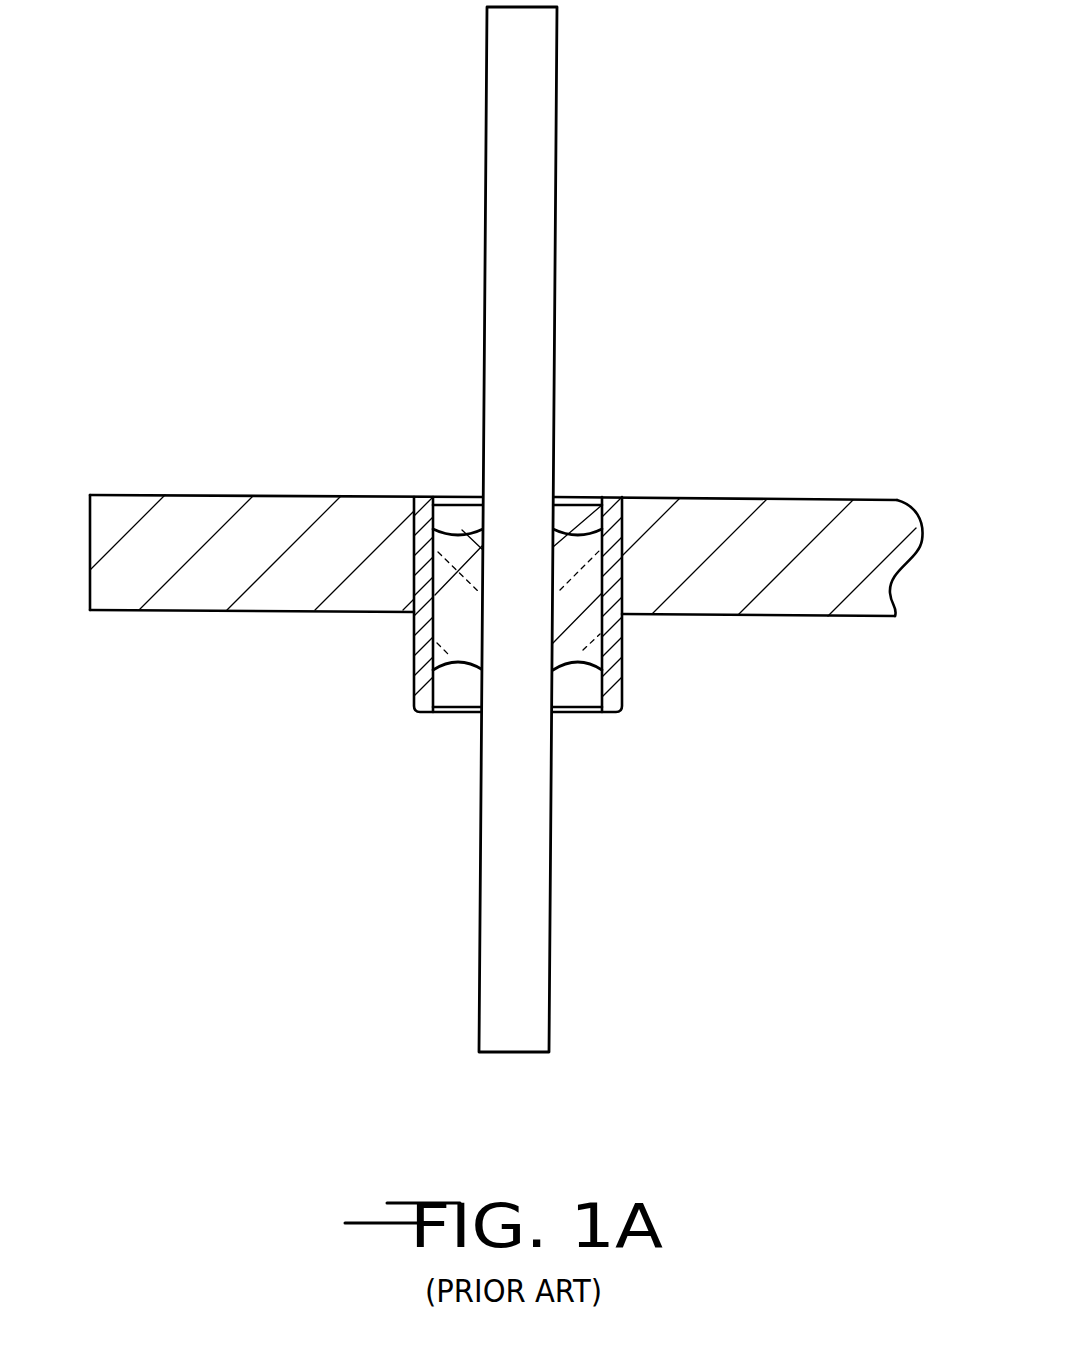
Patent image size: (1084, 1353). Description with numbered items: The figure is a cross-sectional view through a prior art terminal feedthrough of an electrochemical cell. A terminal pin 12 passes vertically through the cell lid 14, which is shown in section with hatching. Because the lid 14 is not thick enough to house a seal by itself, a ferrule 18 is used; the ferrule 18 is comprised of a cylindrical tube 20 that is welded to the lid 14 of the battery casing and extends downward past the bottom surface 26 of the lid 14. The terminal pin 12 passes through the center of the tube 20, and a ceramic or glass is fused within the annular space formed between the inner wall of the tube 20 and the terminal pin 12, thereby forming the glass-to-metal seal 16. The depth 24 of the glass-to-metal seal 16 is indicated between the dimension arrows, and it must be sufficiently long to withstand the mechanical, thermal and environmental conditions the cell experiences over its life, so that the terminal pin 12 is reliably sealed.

The terminal pin 12 is at (555, 210).
The cell lid 14 is at (287, 495).
The glass-to-metal seal 16 is at (453, 553).
The ferrule 18 is at (379, 672).
The cylindrical tube 20 is at (623, 647).
The depth 24 is at (520, 598).
The bottom surface 26 is at (200, 611).